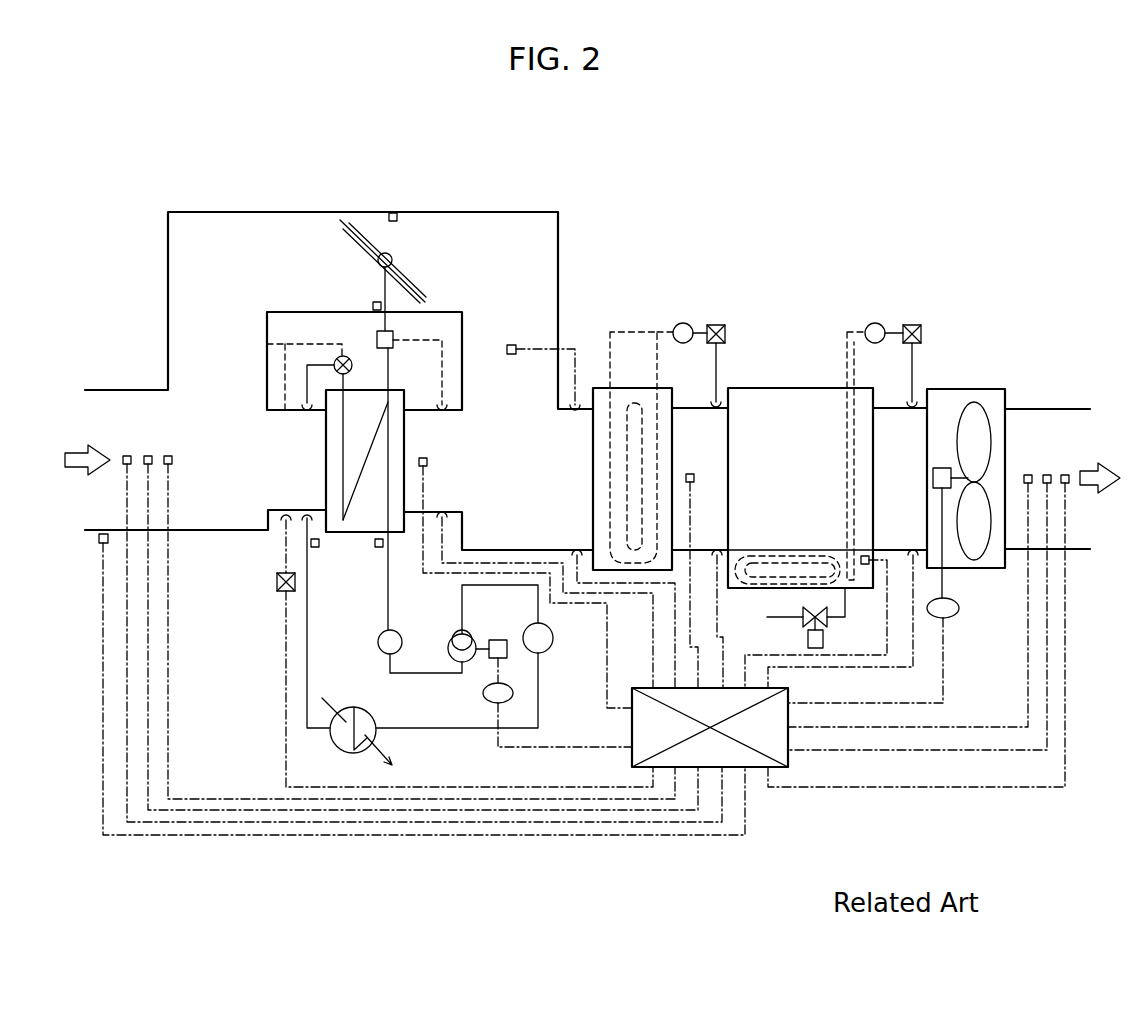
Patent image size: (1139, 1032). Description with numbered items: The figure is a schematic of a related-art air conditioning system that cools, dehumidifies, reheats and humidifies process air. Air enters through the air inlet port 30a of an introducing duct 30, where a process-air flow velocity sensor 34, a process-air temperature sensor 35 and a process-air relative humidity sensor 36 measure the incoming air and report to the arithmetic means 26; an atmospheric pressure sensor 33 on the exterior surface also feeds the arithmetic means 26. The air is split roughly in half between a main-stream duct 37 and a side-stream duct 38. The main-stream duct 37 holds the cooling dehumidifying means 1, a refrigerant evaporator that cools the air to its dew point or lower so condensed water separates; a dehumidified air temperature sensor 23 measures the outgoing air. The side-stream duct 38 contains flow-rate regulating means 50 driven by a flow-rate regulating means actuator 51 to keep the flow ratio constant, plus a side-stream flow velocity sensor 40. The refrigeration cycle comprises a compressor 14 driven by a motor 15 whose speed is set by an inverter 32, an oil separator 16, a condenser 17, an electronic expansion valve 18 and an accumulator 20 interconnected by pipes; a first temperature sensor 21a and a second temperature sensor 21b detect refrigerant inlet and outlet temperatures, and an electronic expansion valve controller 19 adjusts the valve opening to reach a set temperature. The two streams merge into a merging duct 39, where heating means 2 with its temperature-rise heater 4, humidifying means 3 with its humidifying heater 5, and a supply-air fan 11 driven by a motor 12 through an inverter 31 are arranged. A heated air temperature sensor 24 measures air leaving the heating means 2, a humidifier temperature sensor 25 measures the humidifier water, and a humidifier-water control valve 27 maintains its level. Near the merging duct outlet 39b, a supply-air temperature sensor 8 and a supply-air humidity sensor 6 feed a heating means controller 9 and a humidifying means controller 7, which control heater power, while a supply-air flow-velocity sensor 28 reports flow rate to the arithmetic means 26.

The cooling dehumidifying means 1 is at (365, 390).
The heating means 2 is at (662, 386).
The humidifying means 3 is at (772, 386).
The temperature-rise heater 4 is at (627, 332).
The humidifying heater 5 is at (845, 370).
The supply-air humidity sensor 6 is at (1046, 473).
The humidifying means controller 7 is at (914, 325).
The supply-air temperature sensor 8 is at (1064, 473).
The heating means controller 9 is at (720, 325).
The supply-air fan 11 is at (985, 432).
The motor 12 is at (942, 468).
The compressor 14 is at (458, 634).
The motor 15 is at (500, 640).
The oil separator 16 is at (553, 640).
The condenser 17 is at (366, 712).
The electronic expansion valve 18 is at (347, 356).
The electronic expansion valve controller 19 is at (276, 582).
The accumulator 20 is at (383, 632).
The first temperature sensor 21a is at (320, 548).
The second temperature sensor 21b is at (375, 548).
The dehumidified air temperature sensor 23 is at (420, 470).
The heated air temperature sensor 24 is at (692, 487).
The humidifier temperature sensor 25 is at (866, 568).
The arithmetic means 26 is at (632, 725).
The humidifier-water control valve 27 is at (803, 622).
The supply-air flow-velocity sensor 28 is at (1028, 487).
The introducing duct 30 is at (148, 388).
The air inlet port 30a is at (95, 472).
The inverter 31 is at (948, 618).
The inverter 32 is at (483, 695).
The atmospheric pressure sensor 33 is at (100, 548).
The process-air flow velocity sensor 34 is at (124, 455).
The process-air temperature sensor 35 is at (146, 455).
The process-air relative humidity sensor 36 is at (170, 468).
The main-stream duct 37 is at (422, 402).
The side-stream duct 38 is at (560, 330).
The merging duct 39 is at (1075, 550).
The merging duct outlet 39b is at (1100, 468).
The side-stream flow velocity sensor 40 is at (515, 345).
The flow-rate regulating means 50 is at (391, 256).
The flow-rate regulating means actuator 51 is at (394, 334).